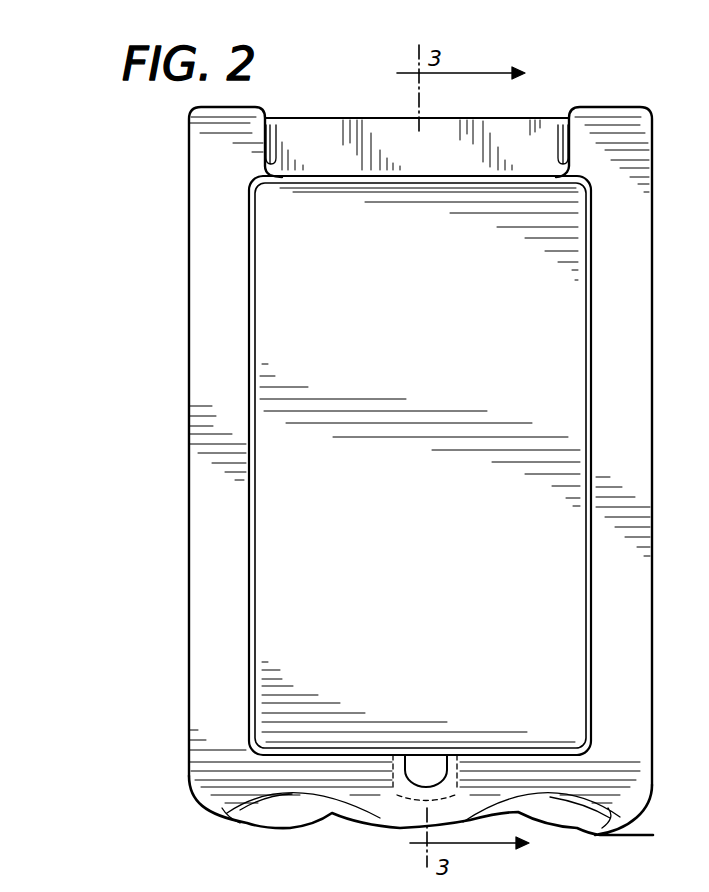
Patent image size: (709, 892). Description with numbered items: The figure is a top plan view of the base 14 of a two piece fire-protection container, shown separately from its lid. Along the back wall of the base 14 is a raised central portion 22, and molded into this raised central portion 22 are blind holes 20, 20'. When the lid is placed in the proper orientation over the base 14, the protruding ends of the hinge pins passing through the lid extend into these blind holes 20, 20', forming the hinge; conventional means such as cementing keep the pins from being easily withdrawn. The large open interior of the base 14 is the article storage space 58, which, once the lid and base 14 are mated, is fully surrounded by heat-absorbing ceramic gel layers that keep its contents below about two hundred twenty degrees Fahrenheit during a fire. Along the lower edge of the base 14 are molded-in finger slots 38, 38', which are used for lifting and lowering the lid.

The base 14 is at (210, 403).
The blind hole 20 is at (298, 114).
The blind hole 20' is at (569, 106).
The raised central portion 22 is at (362, 145).
The article storage space 58 is at (302, 552).
The finger slot 38 is at (276, 830).
The finger slot 38' is at (576, 827).